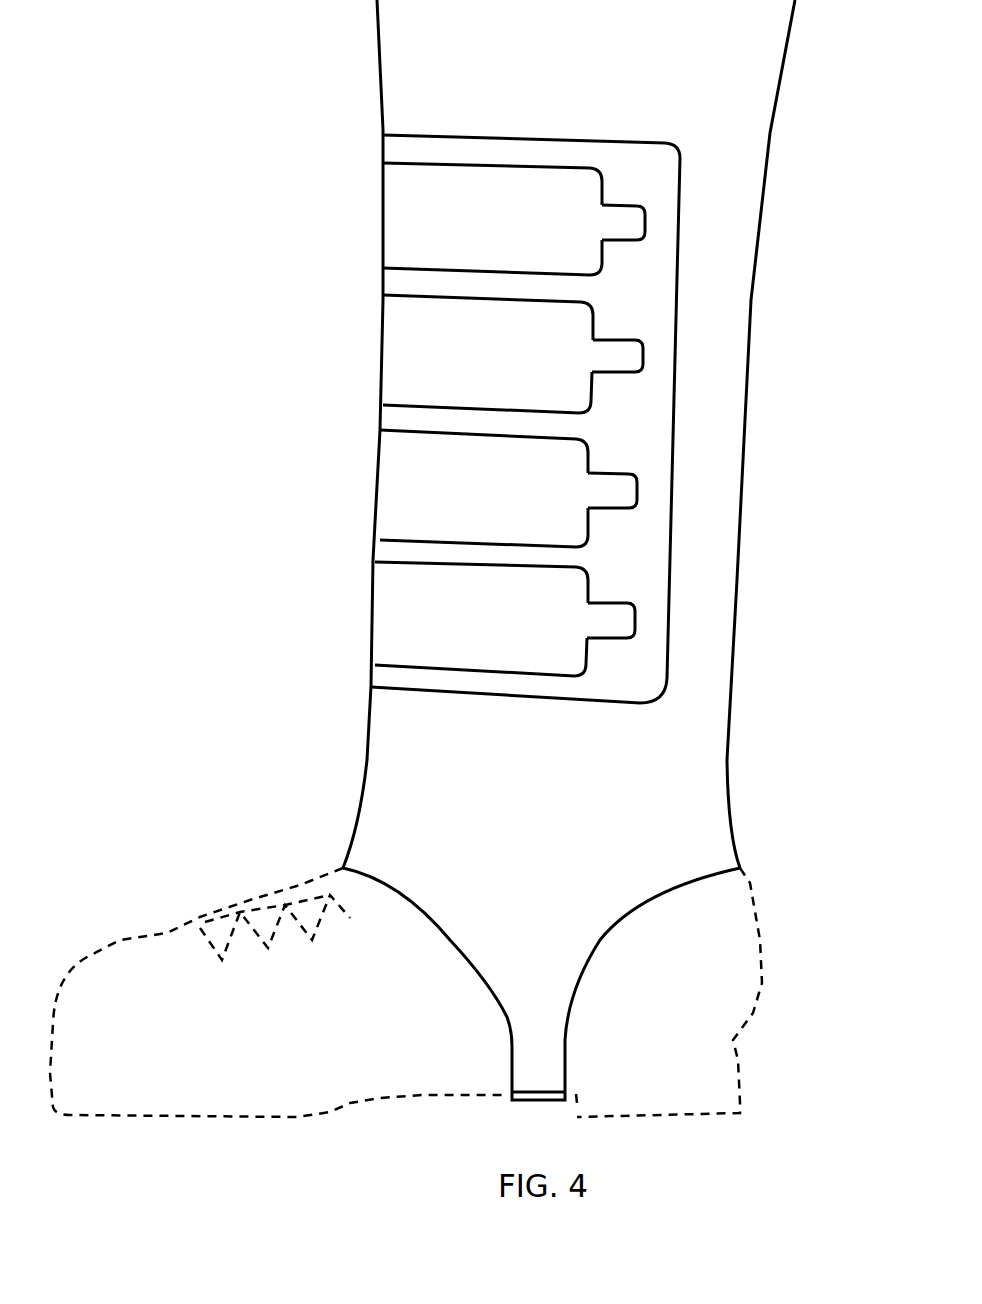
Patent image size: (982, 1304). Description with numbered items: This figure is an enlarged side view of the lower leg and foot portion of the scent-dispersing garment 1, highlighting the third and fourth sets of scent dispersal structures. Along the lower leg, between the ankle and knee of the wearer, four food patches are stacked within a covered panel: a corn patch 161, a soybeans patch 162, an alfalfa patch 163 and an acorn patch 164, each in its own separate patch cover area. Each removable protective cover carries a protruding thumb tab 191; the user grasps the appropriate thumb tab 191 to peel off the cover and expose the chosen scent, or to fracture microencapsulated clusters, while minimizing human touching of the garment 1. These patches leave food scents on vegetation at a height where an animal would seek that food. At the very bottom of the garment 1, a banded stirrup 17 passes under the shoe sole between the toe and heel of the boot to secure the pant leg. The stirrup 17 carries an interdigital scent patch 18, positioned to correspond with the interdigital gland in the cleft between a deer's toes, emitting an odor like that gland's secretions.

The garment 1 is at (697, 22).
The corn patch 161 is at (403, 208).
The soybeans patch 162 is at (403, 342).
The alfalfa patch 163 is at (403, 490).
The acorn patch 164 is at (403, 612).
The thumb tab 191 is at (613, 220).
The banded stirrup 17 is at (543, 1037).
The interdigital scent patch 18 is at (517, 1095).